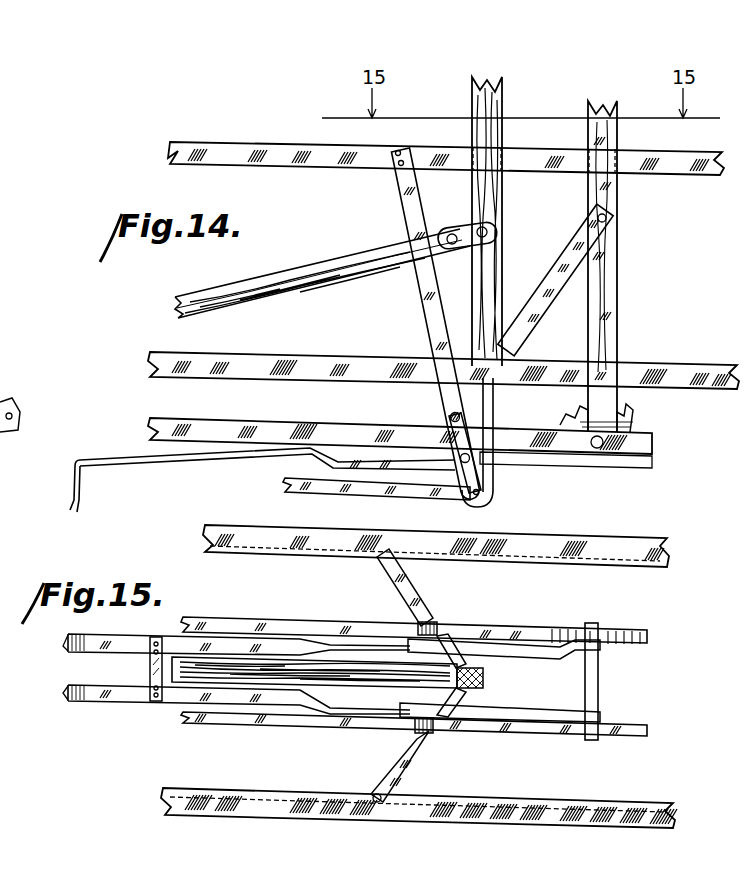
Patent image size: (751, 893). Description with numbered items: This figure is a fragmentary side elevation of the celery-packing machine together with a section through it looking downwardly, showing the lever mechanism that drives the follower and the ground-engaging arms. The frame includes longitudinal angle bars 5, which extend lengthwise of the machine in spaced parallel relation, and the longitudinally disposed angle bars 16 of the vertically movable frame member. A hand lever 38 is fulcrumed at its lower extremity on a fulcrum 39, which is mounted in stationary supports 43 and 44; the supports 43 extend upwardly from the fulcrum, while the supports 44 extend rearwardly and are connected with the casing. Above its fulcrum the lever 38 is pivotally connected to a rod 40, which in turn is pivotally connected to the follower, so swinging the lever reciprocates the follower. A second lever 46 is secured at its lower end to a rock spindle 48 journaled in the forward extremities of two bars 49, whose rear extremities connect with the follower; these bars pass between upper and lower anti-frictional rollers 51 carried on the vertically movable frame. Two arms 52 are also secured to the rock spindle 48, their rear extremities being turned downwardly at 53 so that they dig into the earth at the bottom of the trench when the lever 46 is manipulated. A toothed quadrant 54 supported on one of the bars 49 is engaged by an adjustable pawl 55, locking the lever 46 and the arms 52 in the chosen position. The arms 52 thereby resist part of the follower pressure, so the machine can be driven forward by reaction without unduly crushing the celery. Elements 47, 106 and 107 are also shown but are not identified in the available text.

In FIG. 14, the angle bar 5 is at (650, 363).
In FIG. 14, the longitudinal angle bar 16 is at (548, 170).
In FIG. 15, the longitudinal angle bar 16 is at (597, 547).
In FIG. 14, the hand lever 38 is at (494, 110).
In FIG. 15, the hand lever 38 is at (483, 677).
In FIG. 14, the fulcrum 39 is at (491, 500).
In FIG. 14, the rod 40 is at (330, 265).
In FIG. 15, the rod 40 is at (330, 670).
In FIG. 14, the stationary support 43 is at (410, 210).
In FIG. 15, the stationary support 43 is at (407, 580).
In FIG. 14, the stationary support 44 is at (372, 490).
In FIG. 14, the second lever 46 is at (614, 142).
In FIG. 14, the pin 47 is at (610, 216).
In FIG. 15, the pin 47 is at (607, 635).
In FIG. 15, the rock spindle 48 is at (598, 681).
In FIG. 14, the bar 49 is at (245, 428).
In FIG. 15, the bar 49 is at (243, 622).
In FIG. 14, the anti-frictional roller 51 is at (440, 410).
In FIG. 15, the anti-frictional roller 51 is at (440, 627).
In FIG. 14, the arm 52 is at (218, 458).
In FIG. 15, the arm 52 is at (353, 642).
In FIG. 14, the downwardly turned extremity 53 is at (80, 490).
In FIG. 15, the downwardly turned extremity 53 is at (65, 690).
In FIG. 14, the quadrant 54 is at (637, 425).
In FIG. 14, the pawl 55 is at (613, 400).
In FIG. 14, the bar 106 is at (562, 300).
In FIG. 15, the bar 106 is at (523, 643).
In FIG. 15, the plate 107 is at (150, 680).